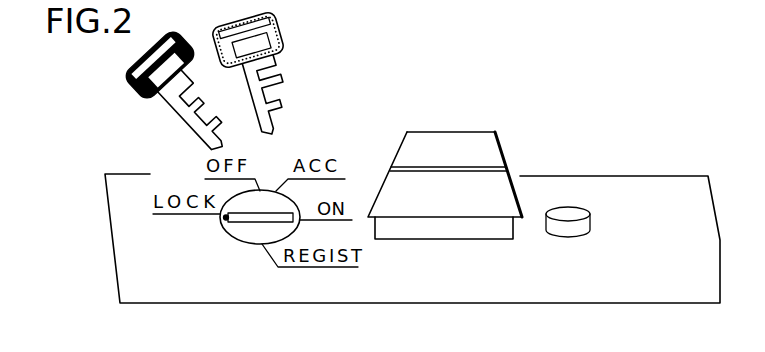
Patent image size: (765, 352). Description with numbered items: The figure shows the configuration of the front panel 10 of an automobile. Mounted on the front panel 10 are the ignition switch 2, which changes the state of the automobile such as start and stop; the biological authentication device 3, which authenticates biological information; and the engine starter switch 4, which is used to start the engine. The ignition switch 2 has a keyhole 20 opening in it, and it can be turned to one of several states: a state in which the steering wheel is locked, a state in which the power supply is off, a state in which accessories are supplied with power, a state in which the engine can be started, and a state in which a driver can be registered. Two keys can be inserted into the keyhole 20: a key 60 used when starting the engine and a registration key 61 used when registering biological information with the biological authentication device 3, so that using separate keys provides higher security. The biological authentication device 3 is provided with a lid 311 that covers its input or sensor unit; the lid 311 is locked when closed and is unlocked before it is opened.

The ignition switch 2 is at (232, 238).
The keyhole 20 is at (266, 212).
The biological authentication device 3 is at (438, 191).
The lid 311 is at (397, 188).
The engine starter switch 4 is at (566, 206).
The front panel 10 is at (578, 304).
The key 60 is at (286, 40).
The registration key 61 is at (130, 84).